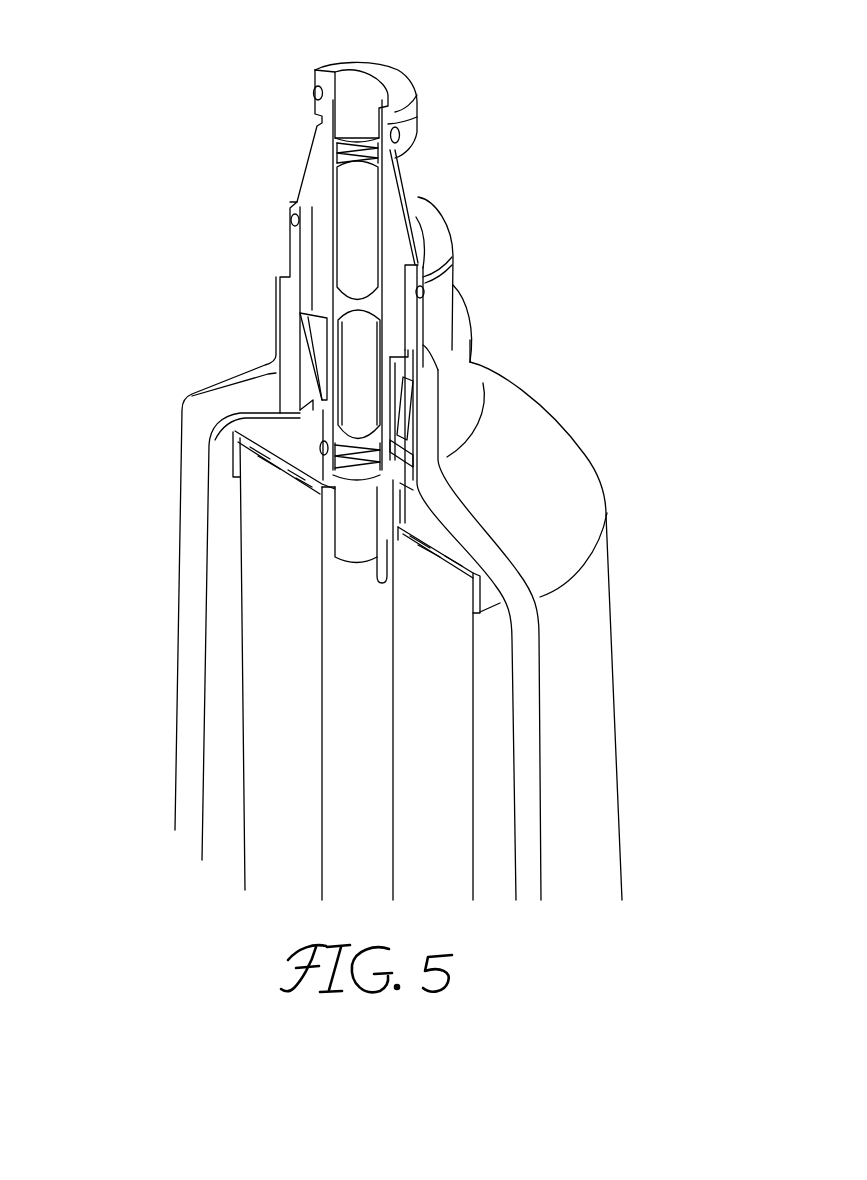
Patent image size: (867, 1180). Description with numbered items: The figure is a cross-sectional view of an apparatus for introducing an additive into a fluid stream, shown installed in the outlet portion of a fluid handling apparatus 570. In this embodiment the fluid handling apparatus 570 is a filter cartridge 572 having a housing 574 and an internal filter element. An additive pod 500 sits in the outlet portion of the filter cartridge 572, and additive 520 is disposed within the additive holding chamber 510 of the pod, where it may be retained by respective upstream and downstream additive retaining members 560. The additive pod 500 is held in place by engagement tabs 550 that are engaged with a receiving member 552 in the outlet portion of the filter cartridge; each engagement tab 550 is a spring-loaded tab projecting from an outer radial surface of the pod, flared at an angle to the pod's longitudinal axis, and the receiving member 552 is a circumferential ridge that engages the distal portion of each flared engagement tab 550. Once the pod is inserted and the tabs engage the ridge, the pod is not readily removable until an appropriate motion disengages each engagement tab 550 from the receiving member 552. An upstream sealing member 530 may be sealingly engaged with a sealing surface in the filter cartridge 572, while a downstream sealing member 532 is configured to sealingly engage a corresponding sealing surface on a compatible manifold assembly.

The additive pod 500 is at (397, 82).
The additive holding chamber 510 is at (322, 314).
The additive 520 is at (362, 213).
The upstream sealing member 530 is at (400, 492).
The downstream sealing member 532 is at (405, 128).
The engagement tab 550 is at (395, 412).
The receiving member 552 is at (413, 392).
The additive retaining member 560 is at (383, 155).
The fluid handling apparatus 570 is at (205, 183).
The filter cartridge 572 is at (593, 775).
The housing 574 is at (520, 638).